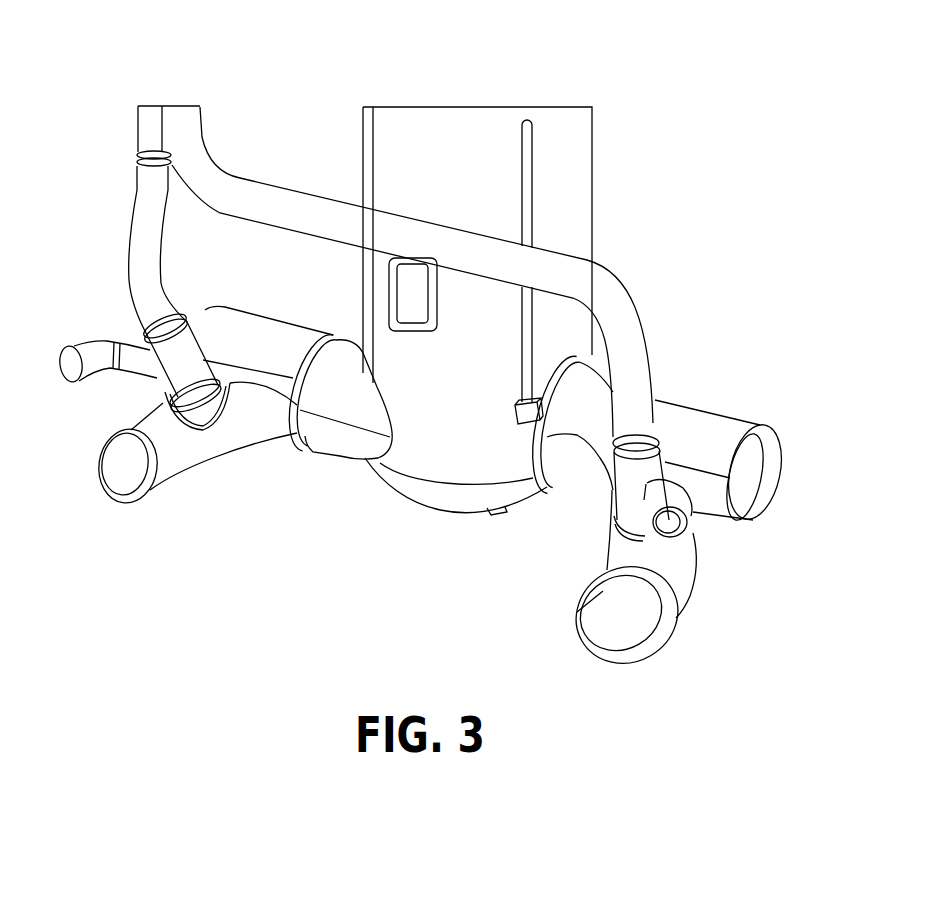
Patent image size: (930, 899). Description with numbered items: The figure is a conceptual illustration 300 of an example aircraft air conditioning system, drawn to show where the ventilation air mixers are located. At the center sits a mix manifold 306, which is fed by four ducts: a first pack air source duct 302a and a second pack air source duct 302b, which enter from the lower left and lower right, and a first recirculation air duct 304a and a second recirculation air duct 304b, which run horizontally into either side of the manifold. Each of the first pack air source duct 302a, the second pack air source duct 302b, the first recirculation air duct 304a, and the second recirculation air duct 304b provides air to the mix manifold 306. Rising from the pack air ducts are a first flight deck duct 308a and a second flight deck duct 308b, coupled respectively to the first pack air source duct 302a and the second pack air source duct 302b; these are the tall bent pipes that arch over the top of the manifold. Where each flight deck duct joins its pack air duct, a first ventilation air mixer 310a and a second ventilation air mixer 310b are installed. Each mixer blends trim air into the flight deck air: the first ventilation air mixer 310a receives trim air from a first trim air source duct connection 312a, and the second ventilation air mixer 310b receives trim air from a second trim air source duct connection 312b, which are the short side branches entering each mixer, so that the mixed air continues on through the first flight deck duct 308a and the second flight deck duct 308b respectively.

The conceptual illustration 300 is at (104, 54).
The first pack air source duct 302a is at (200, 463).
The second pack air source duct 302b is at (714, 621).
The first recirculation air duct 304a is at (224, 308).
The second recirculation air duct 304b is at (811, 479).
The mix manifold 306 is at (592, 170).
The first flight deck duct 308a is at (193, 226).
The second flight deck duct 308b is at (647, 338).
The first ventilation air mixer 310a is at (148, 337).
The second ventilation air mixer 310b is at (692, 527).
The first trim air source duct connection 312a is at (63, 358).
The second trim air source duct connection 312b is at (618, 490).